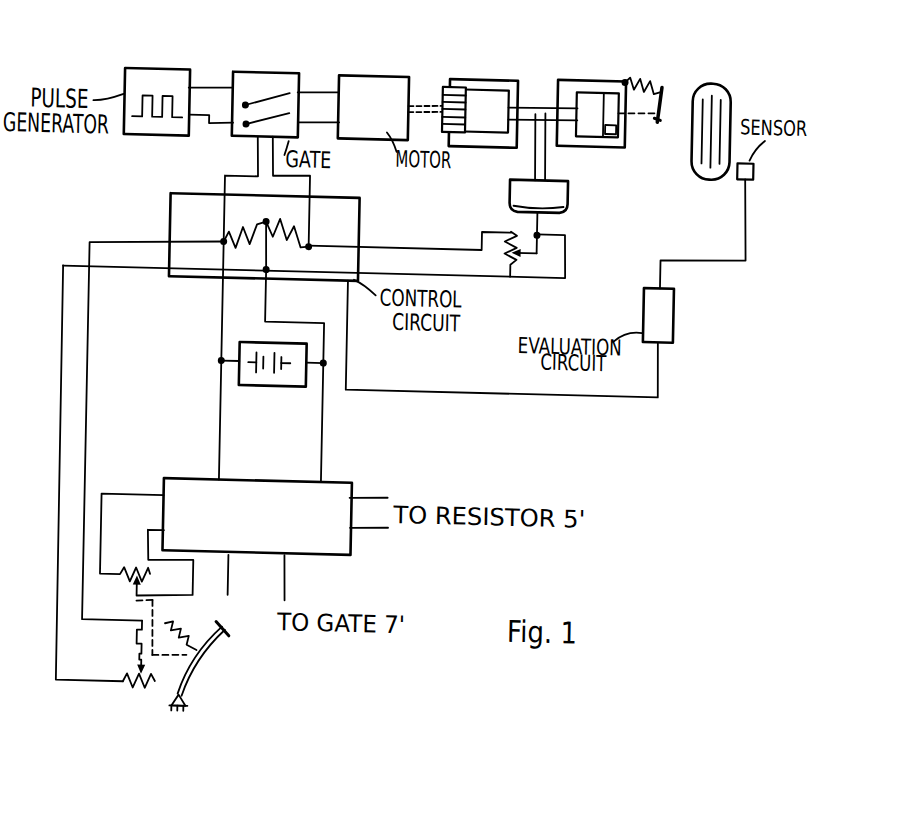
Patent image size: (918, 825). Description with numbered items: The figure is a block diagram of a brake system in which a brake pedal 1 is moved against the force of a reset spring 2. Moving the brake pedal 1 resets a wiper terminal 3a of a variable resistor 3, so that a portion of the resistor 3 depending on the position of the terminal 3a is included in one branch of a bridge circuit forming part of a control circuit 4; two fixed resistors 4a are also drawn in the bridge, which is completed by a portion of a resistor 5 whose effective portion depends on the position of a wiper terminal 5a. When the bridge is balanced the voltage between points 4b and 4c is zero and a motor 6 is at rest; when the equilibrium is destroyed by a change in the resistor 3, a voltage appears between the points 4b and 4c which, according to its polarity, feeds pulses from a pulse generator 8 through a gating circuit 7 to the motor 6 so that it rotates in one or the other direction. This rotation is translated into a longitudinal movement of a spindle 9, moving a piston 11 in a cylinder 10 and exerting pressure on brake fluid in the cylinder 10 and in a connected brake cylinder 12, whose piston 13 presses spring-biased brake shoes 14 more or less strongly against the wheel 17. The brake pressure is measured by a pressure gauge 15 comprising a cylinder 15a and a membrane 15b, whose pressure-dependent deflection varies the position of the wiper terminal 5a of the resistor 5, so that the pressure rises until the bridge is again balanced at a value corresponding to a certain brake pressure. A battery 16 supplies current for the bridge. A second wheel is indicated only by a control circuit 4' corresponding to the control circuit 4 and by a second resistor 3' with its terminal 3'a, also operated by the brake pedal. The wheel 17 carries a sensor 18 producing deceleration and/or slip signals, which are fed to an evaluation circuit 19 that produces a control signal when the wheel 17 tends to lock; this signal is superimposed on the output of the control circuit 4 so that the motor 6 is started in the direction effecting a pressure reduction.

The brake pedal 1 is at (194, 683).
The reset spring 2 is at (205, 650).
The variable resistor 3 is at (133, 710).
The wiper terminal 3a is at (153, 696).
The second resistor 3' is at (132, 538).
The terminal 3'a is at (137, 571).
The control circuit 4 is at (267, 214).
The fixed resistors 4a is at (270, 236).
The bridge point 4b is at (309, 248).
The bridge point 4c is at (218, 244).
The control circuit 4' is at (257, 540).
The resistor 5 is at (505, 265).
The wiper terminal 5a is at (540, 250).
The motor 6 is at (367, 88).
The gating circuit 7 is at (260, 85).
The pulse generator 8 is at (151, 84).
The spindle 9 is at (417, 102).
The cylinder 10 is at (487, 98).
The piston 11 is at (449, 99).
The brake cylinder 12 is at (586, 95).
The piston 13 is at (605, 130).
The brake shoes 14 is at (654, 86).
The pressure gauge 15 is at (563, 188).
The cylinder 15a is at (506, 190).
The membrane 15b is at (542, 218).
The battery 16 is at (272, 393).
The wheel 17 is at (706, 76).
The sensor 18 is at (736, 174).
The evaluation circuit 19 is at (675, 311).